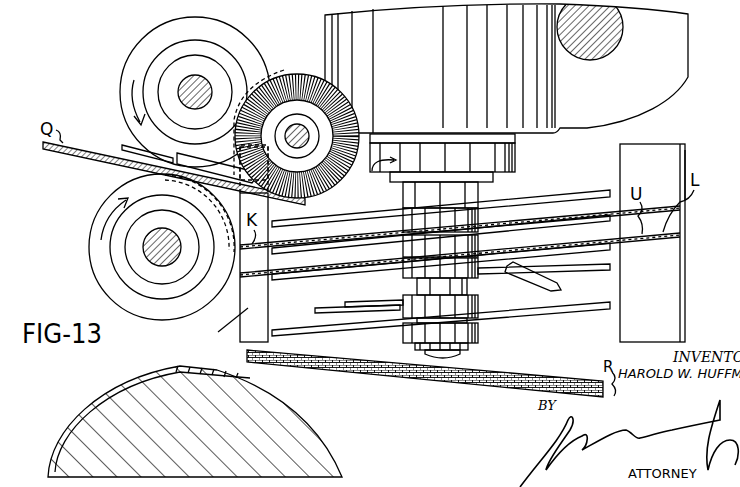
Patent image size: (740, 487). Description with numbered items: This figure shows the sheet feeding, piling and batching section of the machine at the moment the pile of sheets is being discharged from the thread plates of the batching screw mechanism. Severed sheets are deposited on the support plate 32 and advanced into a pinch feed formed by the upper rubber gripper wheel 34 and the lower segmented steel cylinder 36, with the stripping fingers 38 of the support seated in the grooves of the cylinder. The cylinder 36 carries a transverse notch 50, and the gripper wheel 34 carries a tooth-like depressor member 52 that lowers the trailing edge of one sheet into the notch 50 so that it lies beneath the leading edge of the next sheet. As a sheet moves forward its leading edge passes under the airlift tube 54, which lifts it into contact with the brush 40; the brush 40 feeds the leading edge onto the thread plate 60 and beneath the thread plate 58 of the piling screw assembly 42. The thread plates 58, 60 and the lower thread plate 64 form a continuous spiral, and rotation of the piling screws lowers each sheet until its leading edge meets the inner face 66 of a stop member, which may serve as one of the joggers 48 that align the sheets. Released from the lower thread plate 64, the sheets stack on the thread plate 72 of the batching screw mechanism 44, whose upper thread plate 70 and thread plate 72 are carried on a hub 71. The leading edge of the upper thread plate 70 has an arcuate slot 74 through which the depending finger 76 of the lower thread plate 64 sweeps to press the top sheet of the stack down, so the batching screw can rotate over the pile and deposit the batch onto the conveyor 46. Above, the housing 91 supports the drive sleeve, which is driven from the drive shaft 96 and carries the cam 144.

The support plate 32 is at (66, 153).
The gripper wheel 34 is at (136, 62).
The segmented steel cylinder 36 is at (94, 228).
The stripping fingers 38 is at (240, 340).
The brush 40 is at (346, 104).
The piling screw assembly 42 is at (563, 183).
The batching screw mechanism 44 is at (508, 331).
The conveyor 46 is at (176, 364).
The joggers 48 is at (673, 282).
The notch 50 is at (230, 256).
The depressor member 52 is at (284, 72).
The airlift tube 54 is at (118, 146).
The thread plate 58 is at (376, 188).
The thread plate 60 is at (371, 216).
The lower thread plate 64 is at (294, 280).
The inner face 66 is at (672, 160).
The upper thread plate 70 is at (330, 308).
The hub 71 is at (410, 338).
The thread plate 72 is at (560, 316).
The arcuate slot 74 is at (368, 299).
The finger 76 is at (555, 287).
The housing 91 is at (430, 72).
The drive shaft 96 is at (612, 38).
The cam 144 is at (518, 153).